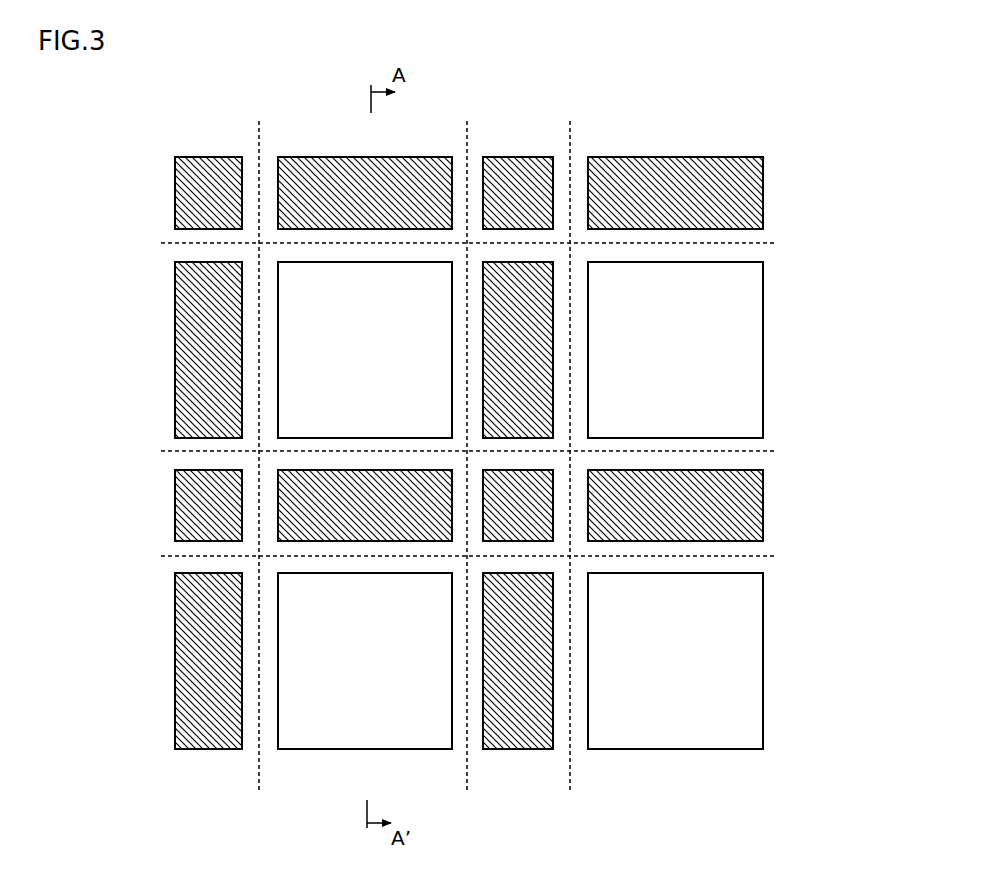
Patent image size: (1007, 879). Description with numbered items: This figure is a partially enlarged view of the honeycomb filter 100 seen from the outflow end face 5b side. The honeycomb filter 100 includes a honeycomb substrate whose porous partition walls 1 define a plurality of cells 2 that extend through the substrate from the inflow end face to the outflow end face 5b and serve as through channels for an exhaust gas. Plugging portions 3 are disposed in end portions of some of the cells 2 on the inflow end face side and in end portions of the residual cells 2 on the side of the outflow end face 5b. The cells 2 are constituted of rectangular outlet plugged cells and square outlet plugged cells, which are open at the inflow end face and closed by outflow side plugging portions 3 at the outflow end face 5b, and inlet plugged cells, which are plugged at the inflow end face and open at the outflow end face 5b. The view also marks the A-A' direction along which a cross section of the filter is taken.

The honeycomb filter 100 is at (842, 98).
The porous partition walls 1 is at (183, 460).
The cells 2 is at (507, 163).
The plugging portions 3 is at (175, 295).
The outflow end face 5b is at (218, 146).